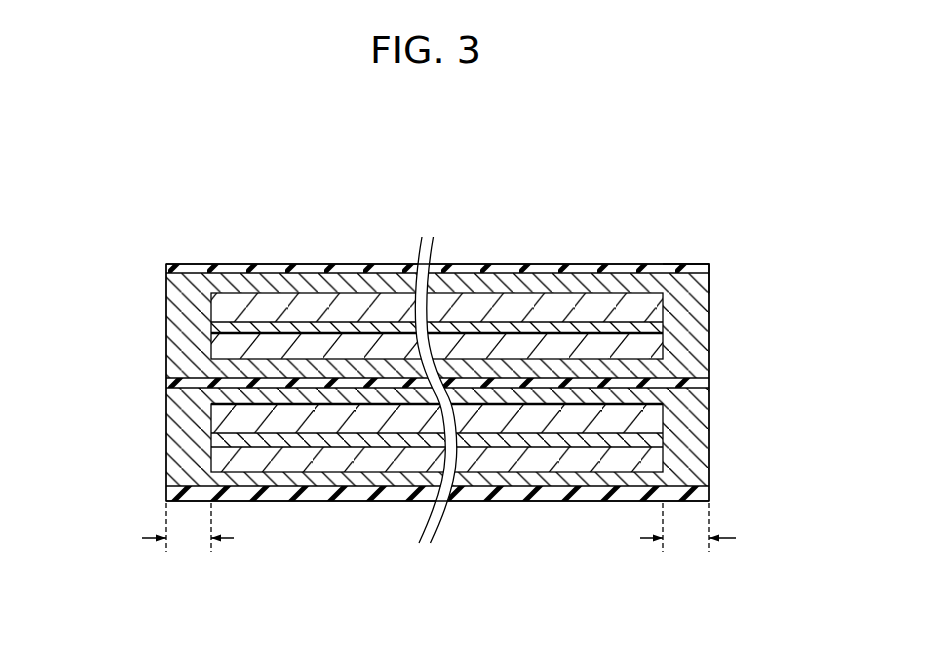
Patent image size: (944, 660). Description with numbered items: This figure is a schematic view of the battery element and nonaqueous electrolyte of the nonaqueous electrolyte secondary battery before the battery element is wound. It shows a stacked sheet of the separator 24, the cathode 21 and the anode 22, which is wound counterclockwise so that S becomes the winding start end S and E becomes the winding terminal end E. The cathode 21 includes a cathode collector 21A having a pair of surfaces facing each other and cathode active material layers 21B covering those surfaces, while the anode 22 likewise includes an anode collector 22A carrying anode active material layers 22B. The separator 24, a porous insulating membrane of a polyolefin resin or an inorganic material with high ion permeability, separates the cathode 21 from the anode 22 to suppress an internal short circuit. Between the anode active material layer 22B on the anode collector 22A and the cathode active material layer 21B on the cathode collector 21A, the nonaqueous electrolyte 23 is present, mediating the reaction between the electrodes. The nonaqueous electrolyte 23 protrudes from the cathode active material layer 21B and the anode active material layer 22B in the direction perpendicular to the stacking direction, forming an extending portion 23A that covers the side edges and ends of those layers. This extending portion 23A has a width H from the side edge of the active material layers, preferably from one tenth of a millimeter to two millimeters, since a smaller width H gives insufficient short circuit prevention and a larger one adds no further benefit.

The cathode 21 is at (434, 507).
The cathode collector 21A is at (220, 443).
The cathode active material layer 21B is at (655, 462).
The anode 22 is at (432, 273).
The anode collector 22A is at (219, 328).
The anode active material layer 22B is at (654, 343).
The nonaqueous electrolyte 23 is at (508, 382).
The extending portion 23A is at (702, 470).
The separator 24 is at (167, 272).
The winding start end S is at (184, 248).
The winding terminal end E is at (690, 252).
The width H is at (439, 527).